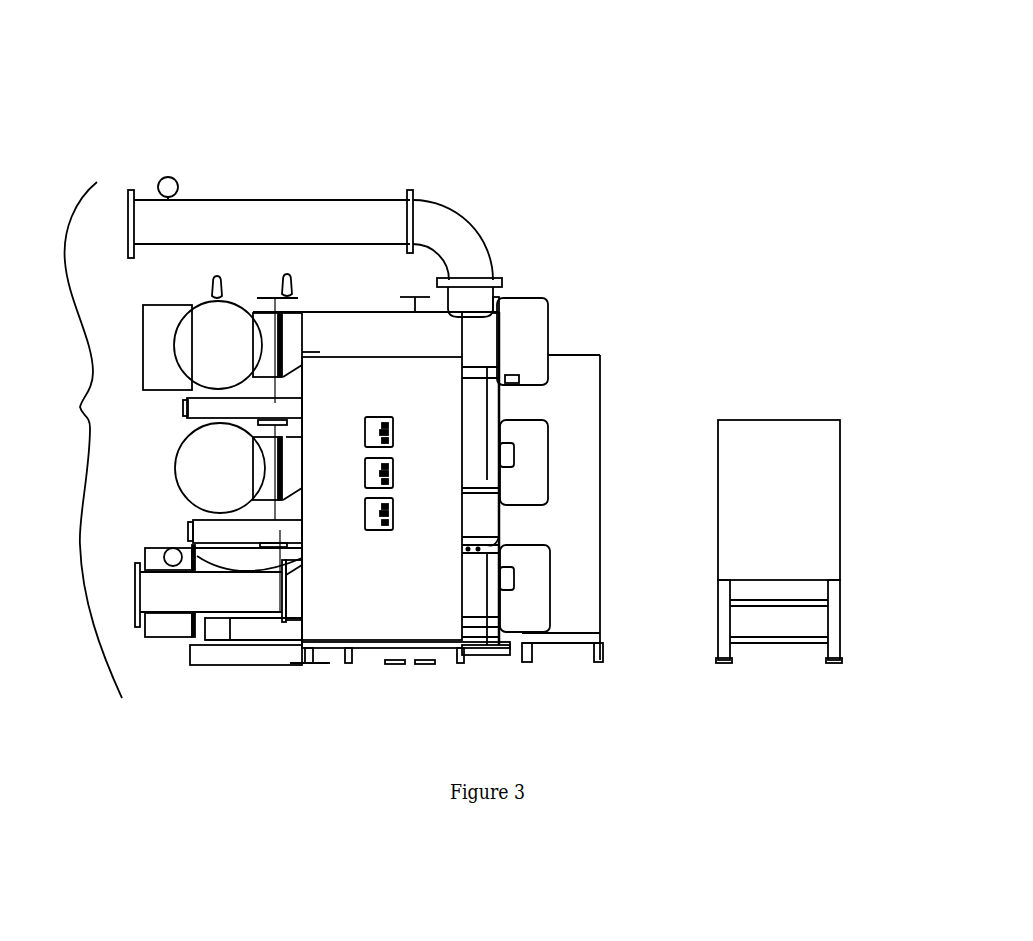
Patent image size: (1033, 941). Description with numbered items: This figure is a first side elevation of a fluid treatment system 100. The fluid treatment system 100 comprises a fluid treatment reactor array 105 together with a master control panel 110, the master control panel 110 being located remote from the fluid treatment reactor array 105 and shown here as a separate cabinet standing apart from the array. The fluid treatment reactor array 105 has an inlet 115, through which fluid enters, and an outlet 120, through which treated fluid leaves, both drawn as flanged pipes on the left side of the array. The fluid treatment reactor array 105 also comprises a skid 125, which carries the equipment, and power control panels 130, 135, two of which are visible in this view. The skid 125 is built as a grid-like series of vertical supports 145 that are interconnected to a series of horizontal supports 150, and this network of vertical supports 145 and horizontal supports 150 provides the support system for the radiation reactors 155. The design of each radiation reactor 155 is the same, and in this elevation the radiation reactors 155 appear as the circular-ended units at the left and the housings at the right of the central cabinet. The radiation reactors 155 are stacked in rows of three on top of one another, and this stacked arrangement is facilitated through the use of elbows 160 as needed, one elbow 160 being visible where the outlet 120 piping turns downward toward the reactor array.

The fluid treatment system 100 is at (600, 150).
The fluid treatment reactor array 105 is at (75, 440).
The master control panel 110 is at (817, 405).
The inlet 115 is at (134, 627).
The outlet 120 is at (127, 198).
The skid 125 is at (371, 650).
The power control panel 130 is at (386, 599).
The power control panel 135 is at (587, 509).
The vertical supports 145 is at (295, 310).
The horizontal supports 150 is at (205, 408).
The radiation reactors 155 is at (228, 362).
The elbows 160 is at (450, 248).